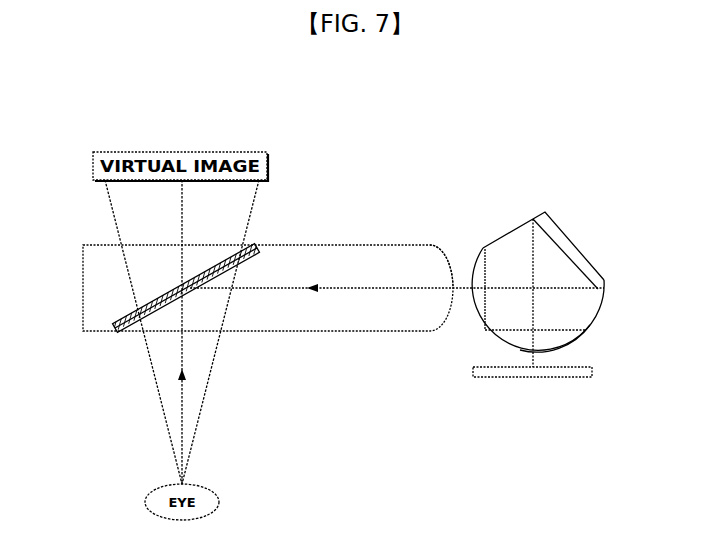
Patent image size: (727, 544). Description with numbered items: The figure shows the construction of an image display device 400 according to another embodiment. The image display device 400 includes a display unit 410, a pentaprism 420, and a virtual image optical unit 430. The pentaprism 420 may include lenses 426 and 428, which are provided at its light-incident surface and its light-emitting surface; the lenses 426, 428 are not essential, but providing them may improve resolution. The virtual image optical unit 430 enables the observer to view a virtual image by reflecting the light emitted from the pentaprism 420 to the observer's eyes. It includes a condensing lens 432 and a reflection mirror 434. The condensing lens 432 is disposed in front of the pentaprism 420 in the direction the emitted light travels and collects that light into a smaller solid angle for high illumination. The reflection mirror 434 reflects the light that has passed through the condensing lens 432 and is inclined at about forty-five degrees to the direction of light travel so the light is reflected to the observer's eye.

The image display device 400 is at (517, 155).
The display unit 410 is at (594, 372).
The pentaprism 420 is at (601, 274).
The lens 426 is at (567, 338).
The lens 428 is at (478, 314).
The virtual image optical unit 430 is at (361, 230).
The condensing lens 432 is at (444, 250).
The reflection mirror 434 is at (118, 318).